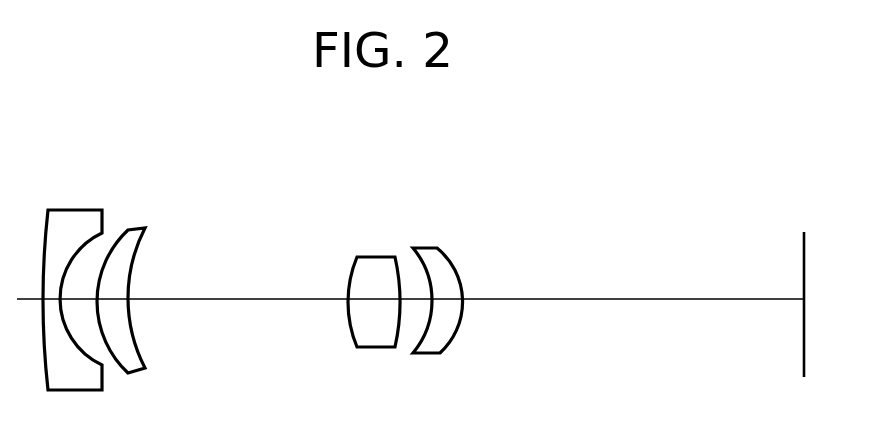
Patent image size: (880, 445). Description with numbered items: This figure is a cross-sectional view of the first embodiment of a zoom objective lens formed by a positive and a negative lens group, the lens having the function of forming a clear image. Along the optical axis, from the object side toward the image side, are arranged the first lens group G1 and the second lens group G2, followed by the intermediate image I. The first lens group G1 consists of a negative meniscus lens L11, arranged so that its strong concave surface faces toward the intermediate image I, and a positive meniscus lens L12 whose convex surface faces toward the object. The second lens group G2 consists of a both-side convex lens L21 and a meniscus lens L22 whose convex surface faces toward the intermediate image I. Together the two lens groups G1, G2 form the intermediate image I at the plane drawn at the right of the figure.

The first lens group G1 is at (180, 157).
The second lens group G2 is at (480, 197).
The negative meniscus lens L11 is at (72, 217).
The positive meniscus lens L12 is at (136, 236).
The both-side convex lens L21 is at (373, 260).
The meniscus lens L22 is at (426, 250).
The intermediate image I is at (804, 257).